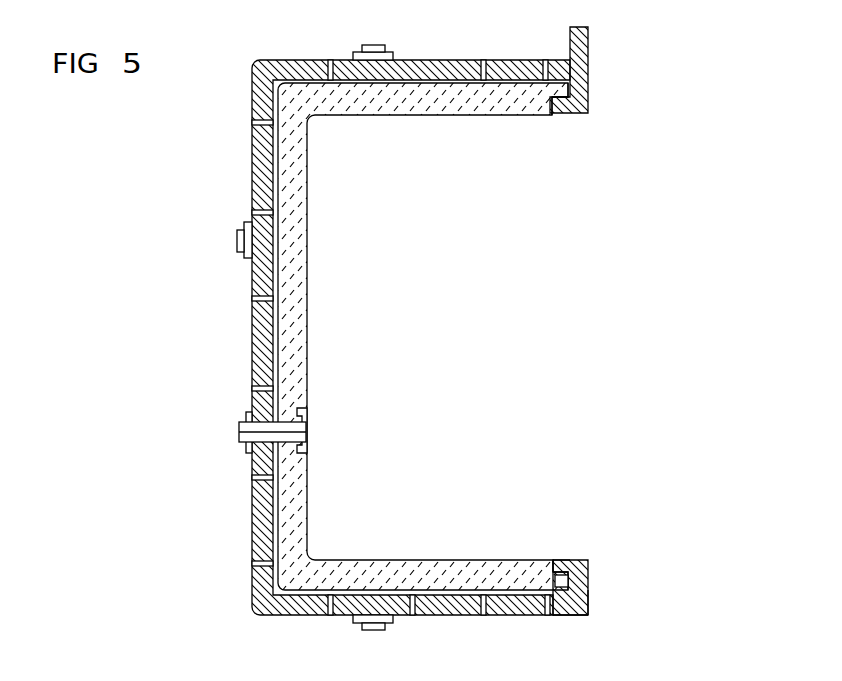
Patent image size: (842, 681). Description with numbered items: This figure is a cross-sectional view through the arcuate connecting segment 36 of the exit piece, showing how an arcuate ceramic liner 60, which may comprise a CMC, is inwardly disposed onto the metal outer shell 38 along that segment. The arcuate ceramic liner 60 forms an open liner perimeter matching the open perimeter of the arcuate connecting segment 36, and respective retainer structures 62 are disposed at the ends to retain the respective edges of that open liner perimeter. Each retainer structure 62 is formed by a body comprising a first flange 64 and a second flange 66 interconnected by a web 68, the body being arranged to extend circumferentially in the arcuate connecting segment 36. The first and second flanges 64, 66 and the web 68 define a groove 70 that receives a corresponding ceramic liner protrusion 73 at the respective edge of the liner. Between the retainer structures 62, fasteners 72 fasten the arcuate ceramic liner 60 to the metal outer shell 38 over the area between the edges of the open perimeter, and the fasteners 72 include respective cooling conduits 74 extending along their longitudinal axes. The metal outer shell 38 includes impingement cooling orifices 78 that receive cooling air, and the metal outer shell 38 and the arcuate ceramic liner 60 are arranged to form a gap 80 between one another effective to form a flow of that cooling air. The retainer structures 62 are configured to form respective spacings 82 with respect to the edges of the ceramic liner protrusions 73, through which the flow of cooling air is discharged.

The arcuate connecting segment 36 is at (228, 180).
The metal outer shell 38 is at (252, 340).
The arcuate ceramic liner 60 is at (292, 242).
The retainer structure 62 is at (596, 60).
The first flange 64 is at (563, 560).
The second flange 66 is at (573, 615).
The web 68 is at (588, 603).
The groove 70 is at (568, 580).
The fastener 72 is at (385, 46).
The ceramic liner protrusion 73 is at (560, 96).
The cooling conduit 74 is at (243, 432).
The impingement cooling orifice 78 is at (330, 68).
The gap 80 is at (277, 327).
The spacing 82 is at (547, 110).